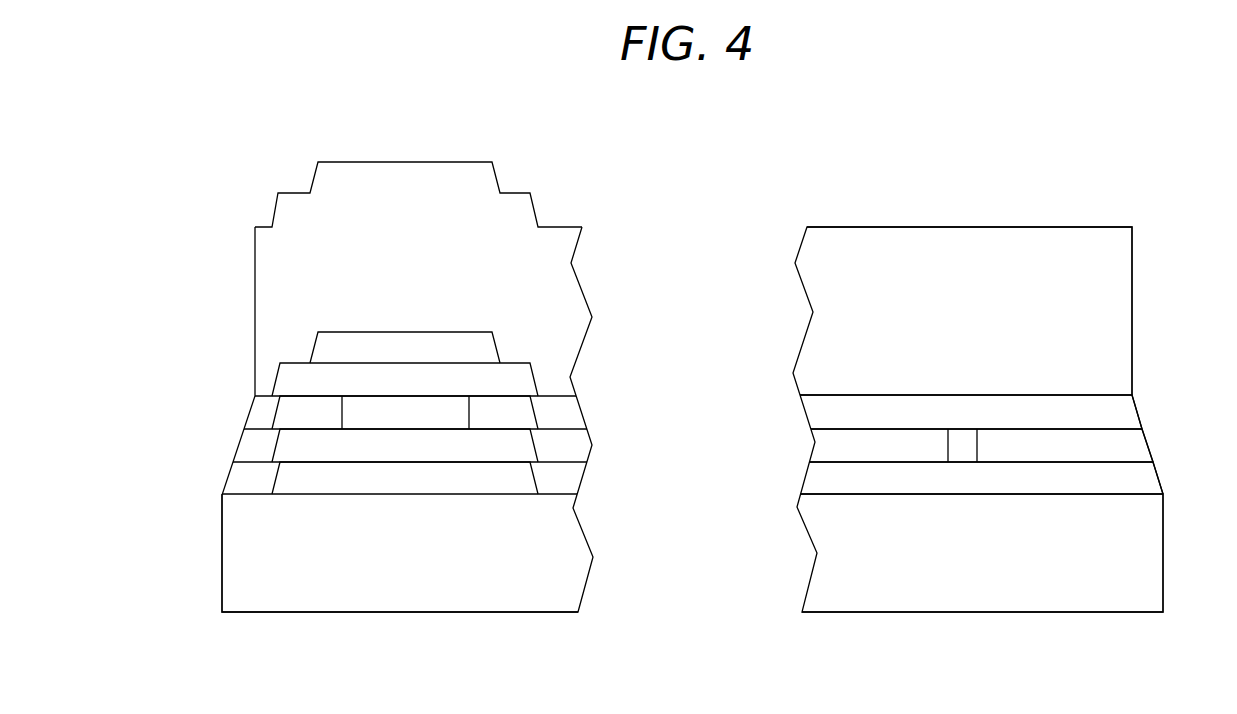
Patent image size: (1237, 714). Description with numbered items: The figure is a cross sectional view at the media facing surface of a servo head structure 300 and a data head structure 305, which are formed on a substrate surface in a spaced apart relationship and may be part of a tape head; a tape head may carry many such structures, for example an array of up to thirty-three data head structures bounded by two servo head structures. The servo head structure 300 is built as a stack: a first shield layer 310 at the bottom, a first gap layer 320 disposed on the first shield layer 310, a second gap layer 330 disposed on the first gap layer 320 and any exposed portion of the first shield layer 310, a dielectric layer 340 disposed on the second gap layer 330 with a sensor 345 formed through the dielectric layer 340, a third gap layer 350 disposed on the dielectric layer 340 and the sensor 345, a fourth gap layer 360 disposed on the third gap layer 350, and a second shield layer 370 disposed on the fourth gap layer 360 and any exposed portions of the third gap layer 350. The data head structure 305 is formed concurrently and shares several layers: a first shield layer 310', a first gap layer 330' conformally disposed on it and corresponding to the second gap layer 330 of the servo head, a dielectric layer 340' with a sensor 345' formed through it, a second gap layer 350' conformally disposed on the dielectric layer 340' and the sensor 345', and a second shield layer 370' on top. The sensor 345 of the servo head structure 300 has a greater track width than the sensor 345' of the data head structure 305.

The servo head structure 300 is at (557, 179).
The data head structure 305 is at (890, 179).
The first shield layer 310 is at (446, 553).
The first gap layer 320 is at (429, 488).
The second gap layer 330 is at (471, 478).
The dielectric layer 340 is at (471, 441).
The sensor 345 is at (352, 412).
The third gap layer 350 is at (464, 389).
The fourth gap layer 360 is at (482, 342).
The second shield layer 370 is at (377, 226).
The first shield layer 310' is at (941, 553).
The first gap layer 330' is at (941, 486).
The dielectric layer 340' is at (935, 449).
The sensor 345' is at (960, 397).
The second gap layer 350' is at (927, 413).
The second shield layer 370' is at (917, 311).